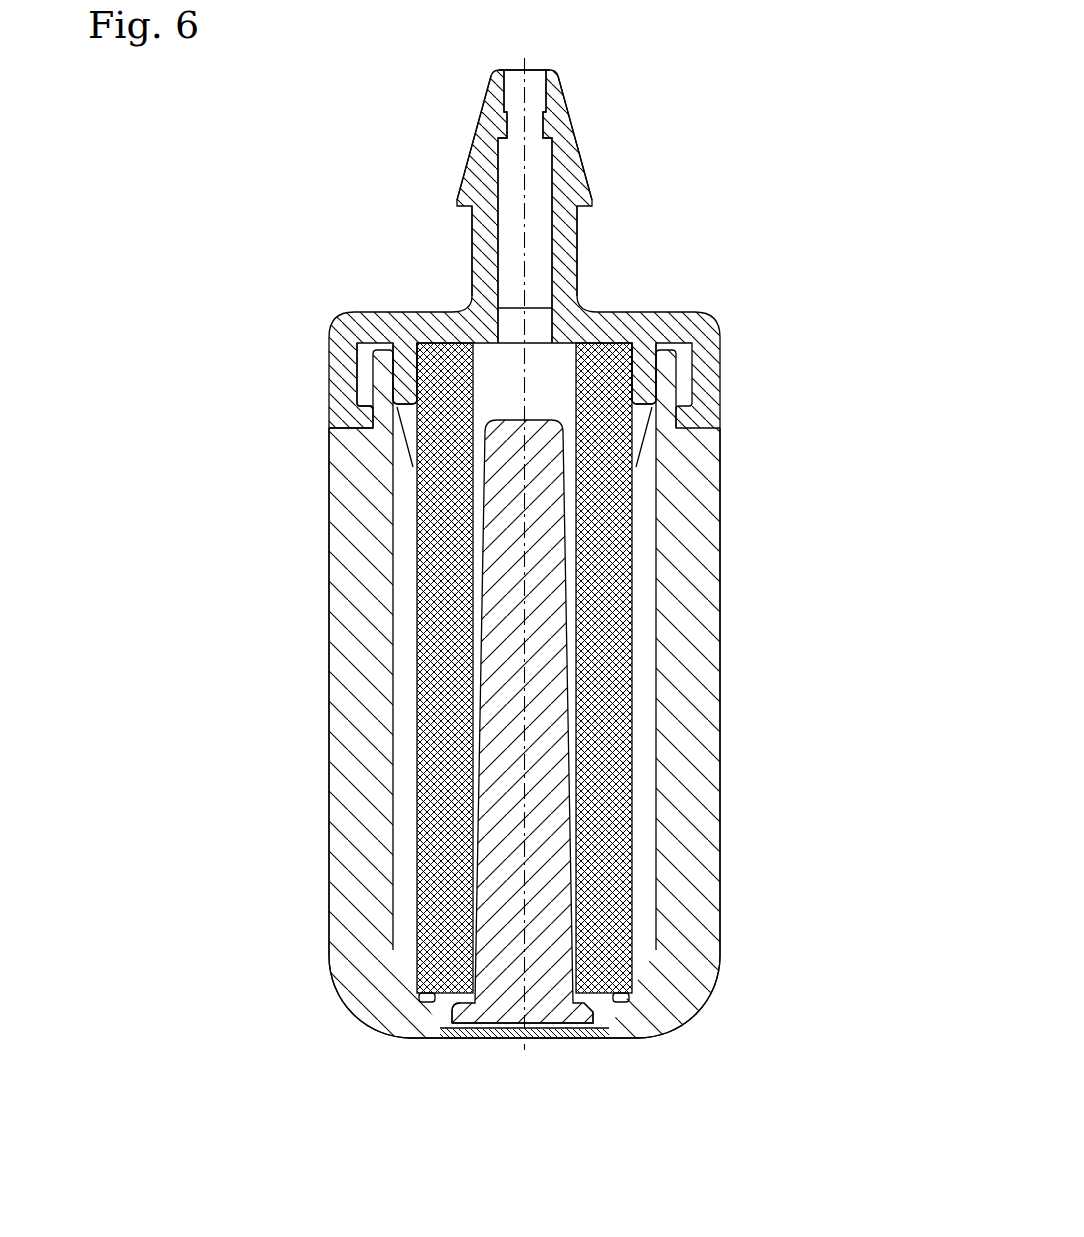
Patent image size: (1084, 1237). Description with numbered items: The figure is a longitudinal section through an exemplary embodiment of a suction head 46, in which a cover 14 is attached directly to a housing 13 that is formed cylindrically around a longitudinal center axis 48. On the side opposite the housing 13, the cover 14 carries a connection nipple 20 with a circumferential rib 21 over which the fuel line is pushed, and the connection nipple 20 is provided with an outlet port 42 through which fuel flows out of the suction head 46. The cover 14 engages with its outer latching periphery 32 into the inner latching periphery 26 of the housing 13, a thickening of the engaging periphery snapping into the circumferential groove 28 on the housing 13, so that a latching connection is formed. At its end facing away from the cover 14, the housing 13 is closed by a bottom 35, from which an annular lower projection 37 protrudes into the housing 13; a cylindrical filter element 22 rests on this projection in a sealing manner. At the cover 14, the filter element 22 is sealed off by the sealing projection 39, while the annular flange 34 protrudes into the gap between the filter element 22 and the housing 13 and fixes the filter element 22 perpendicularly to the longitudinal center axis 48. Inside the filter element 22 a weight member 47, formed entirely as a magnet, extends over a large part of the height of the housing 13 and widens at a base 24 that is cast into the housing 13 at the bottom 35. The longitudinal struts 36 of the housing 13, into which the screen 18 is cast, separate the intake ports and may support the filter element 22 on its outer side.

The housing 13 is at (707, 712).
The cover 14 is at (612, 325).
The screen 18 is at (656, 763).
The connection nipple 20 is at (480, 262).
The circumferential rib 21 is at (461, 188).
The filter element 22 is at (636, 824).
The base 24 is at (589, 1030).
The inner latching periphery 26 is at (357, 372).
The circumferential groove 28 is at (350, 432).
The outer latching periphery 32 is at (352, 413).
The annular flange 34 is at (650, 378).
The bottom 35 is at (630, 1020).
The longitudinal struts 36 is at (378, 760).
The annular lower projection 37 is at (436, 998).
The sealing projection 39 is at (416, 316).
The outlet port 42 is at (542, 70).
The suction head 46 is at (803, 188).
The weight member 47 is at (548, 652).
The longitudinal center axis 48 is at (528, 194).